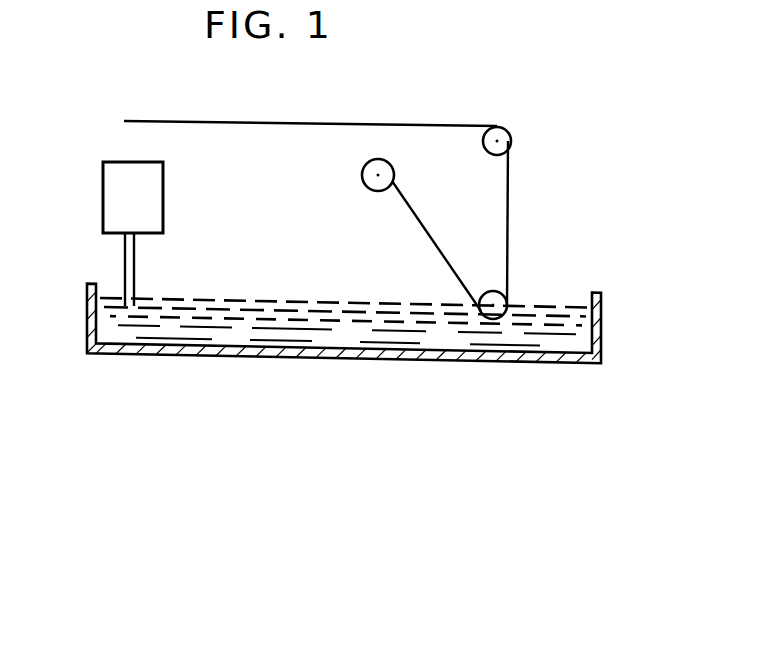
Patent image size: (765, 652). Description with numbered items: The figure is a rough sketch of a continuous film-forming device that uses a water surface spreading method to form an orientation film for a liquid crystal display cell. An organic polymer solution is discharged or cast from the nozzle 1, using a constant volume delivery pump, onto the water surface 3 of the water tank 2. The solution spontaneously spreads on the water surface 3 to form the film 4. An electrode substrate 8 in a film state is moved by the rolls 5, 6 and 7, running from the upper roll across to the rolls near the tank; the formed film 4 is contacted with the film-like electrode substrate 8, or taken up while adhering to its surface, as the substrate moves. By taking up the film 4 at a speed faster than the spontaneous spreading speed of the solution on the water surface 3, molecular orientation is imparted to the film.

The nozzle 1 is at (137, 270).
The water tank 2 is at (301, 356).
The water surface 3 is at (222, 334).
The film 4 is at (285, 300).
The roll 5 is at (366, 172).
The roll 6 is at (488, 290).
The roll 7 is at (511, 143).
The electrode substrate in a film state 8 is at (428, 216).